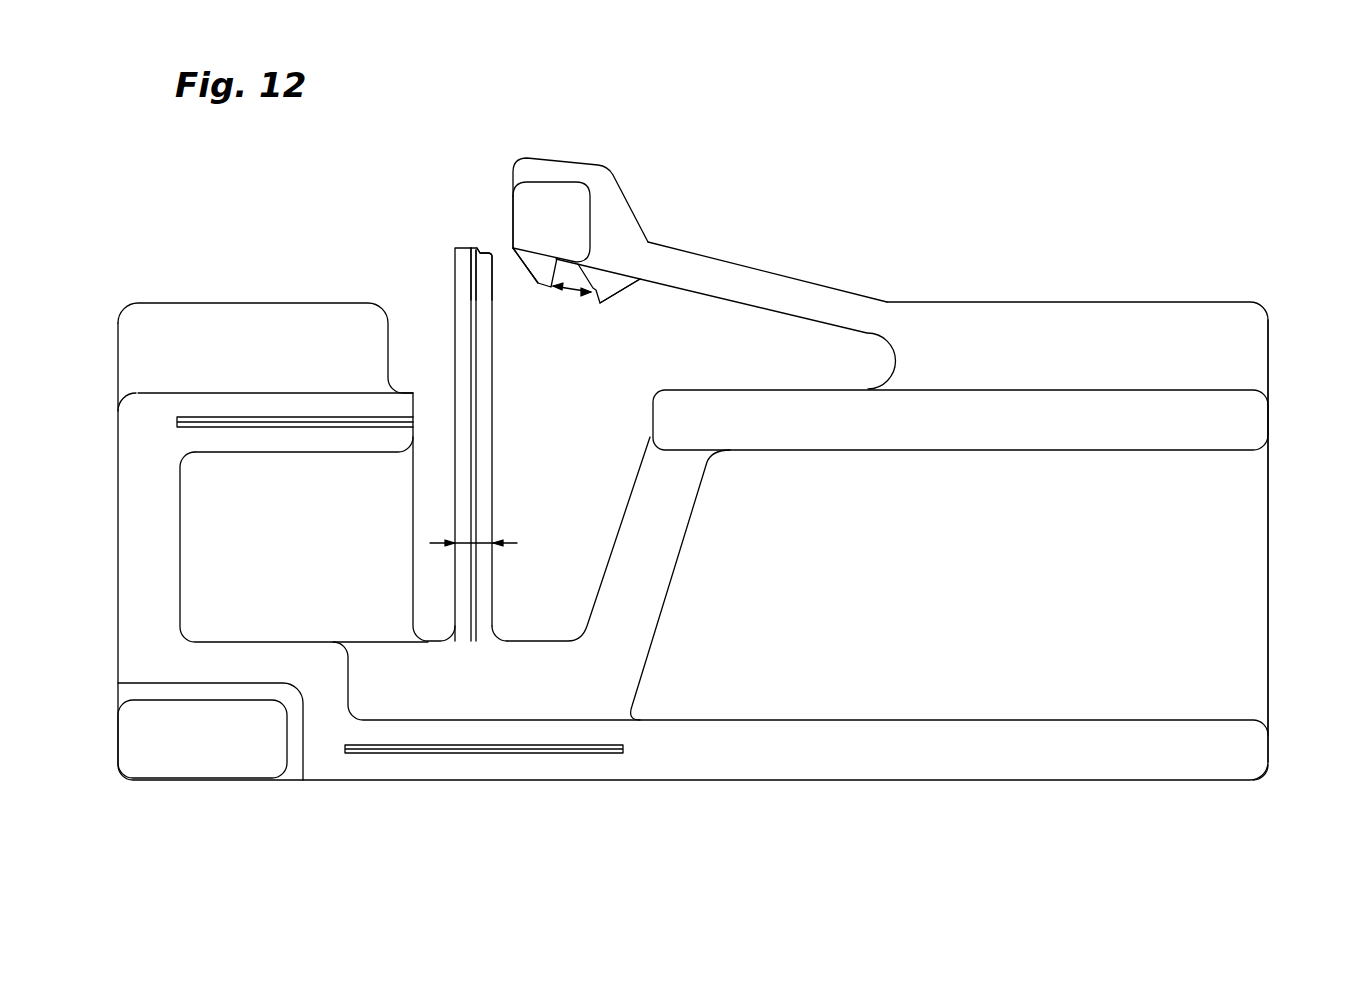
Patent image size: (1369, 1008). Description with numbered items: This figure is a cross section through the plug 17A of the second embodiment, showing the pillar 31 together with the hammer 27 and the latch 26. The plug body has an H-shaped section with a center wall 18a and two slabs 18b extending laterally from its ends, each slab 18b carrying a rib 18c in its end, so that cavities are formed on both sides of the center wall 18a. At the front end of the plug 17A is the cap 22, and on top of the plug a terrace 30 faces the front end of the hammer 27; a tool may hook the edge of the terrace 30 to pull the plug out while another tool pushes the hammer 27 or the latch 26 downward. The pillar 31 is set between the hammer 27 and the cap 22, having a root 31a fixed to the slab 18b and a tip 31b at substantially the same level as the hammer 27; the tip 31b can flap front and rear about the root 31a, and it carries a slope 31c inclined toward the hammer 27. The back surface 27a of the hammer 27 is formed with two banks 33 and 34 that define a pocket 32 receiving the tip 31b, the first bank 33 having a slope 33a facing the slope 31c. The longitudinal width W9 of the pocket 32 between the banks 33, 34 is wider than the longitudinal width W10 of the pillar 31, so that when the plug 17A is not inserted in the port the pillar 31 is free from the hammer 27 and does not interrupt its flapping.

The plug 17A is at (964, 166).
The center wall 18a is at (1230, 581).
The slab 18b is at (1230, 423).
The rib 18c is at (238, 423).
The cap 22 is at (118, 443).
The latch 26 is at (783, 272).
The hammer 27 is at (571, 156).
The back surface of the hammer 27a is at (609, 270).
The terrace 30 is at (272, 325).
The pillar 31 is at (452, 294).
The root 31a is at (485, 620).
The tip 31b is at (453, 246).
The slope 31c is at (488, 248).
The pocket 32 is at (573, 277).
The bank 33 is at (543, 294).
The slope 33a is at (523, 272).
The bank 34 is at (598, 303).
The longitudinal width of the pocket W9 is at (573, 297).
The longitudinal width of the pillar W10 is at (485, 540).